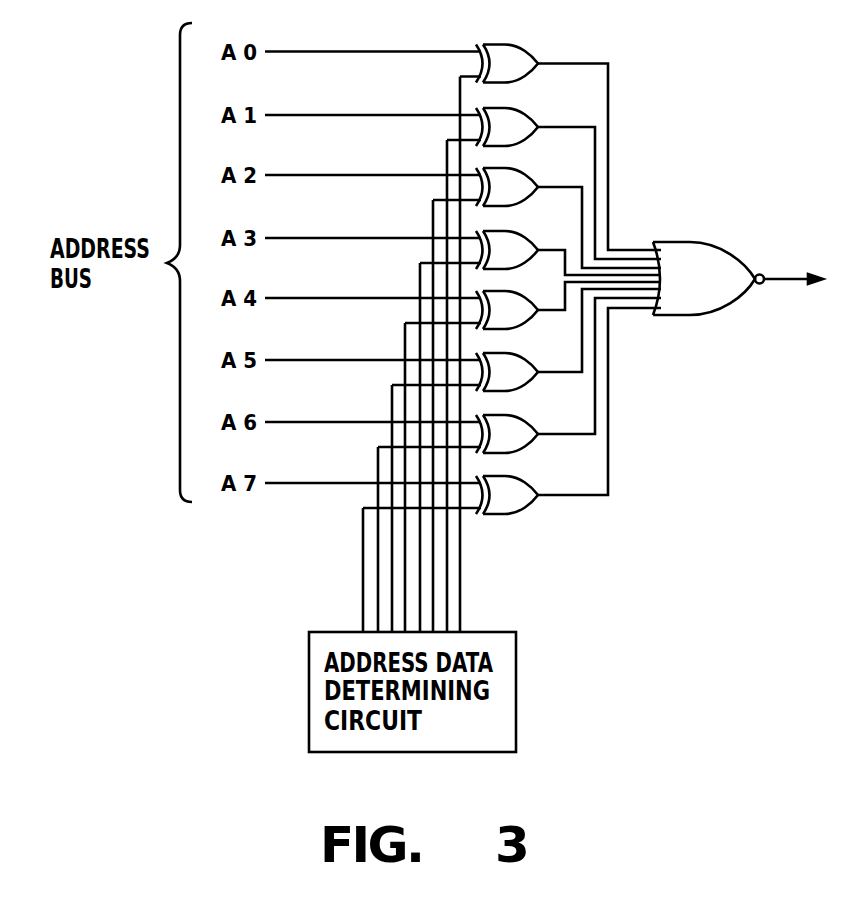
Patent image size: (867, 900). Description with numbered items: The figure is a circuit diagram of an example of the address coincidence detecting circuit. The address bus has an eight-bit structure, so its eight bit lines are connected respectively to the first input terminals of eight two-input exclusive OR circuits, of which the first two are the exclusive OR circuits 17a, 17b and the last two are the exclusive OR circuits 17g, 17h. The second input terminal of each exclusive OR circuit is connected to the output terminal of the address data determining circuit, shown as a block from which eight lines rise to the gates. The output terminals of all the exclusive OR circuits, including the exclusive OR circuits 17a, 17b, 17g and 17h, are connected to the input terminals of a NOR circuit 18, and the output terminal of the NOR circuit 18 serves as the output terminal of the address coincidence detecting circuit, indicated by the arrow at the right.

The exclusive OR circuit 17a is at (531, 52).
The exclusive OR circuit 17b is at (531, 119).
The exclusive OR circuit 17g is at (530, 449).
The exclusive OR circuit 17h is at (530, 511).
The NOR circuit 18 is at (705, 242).